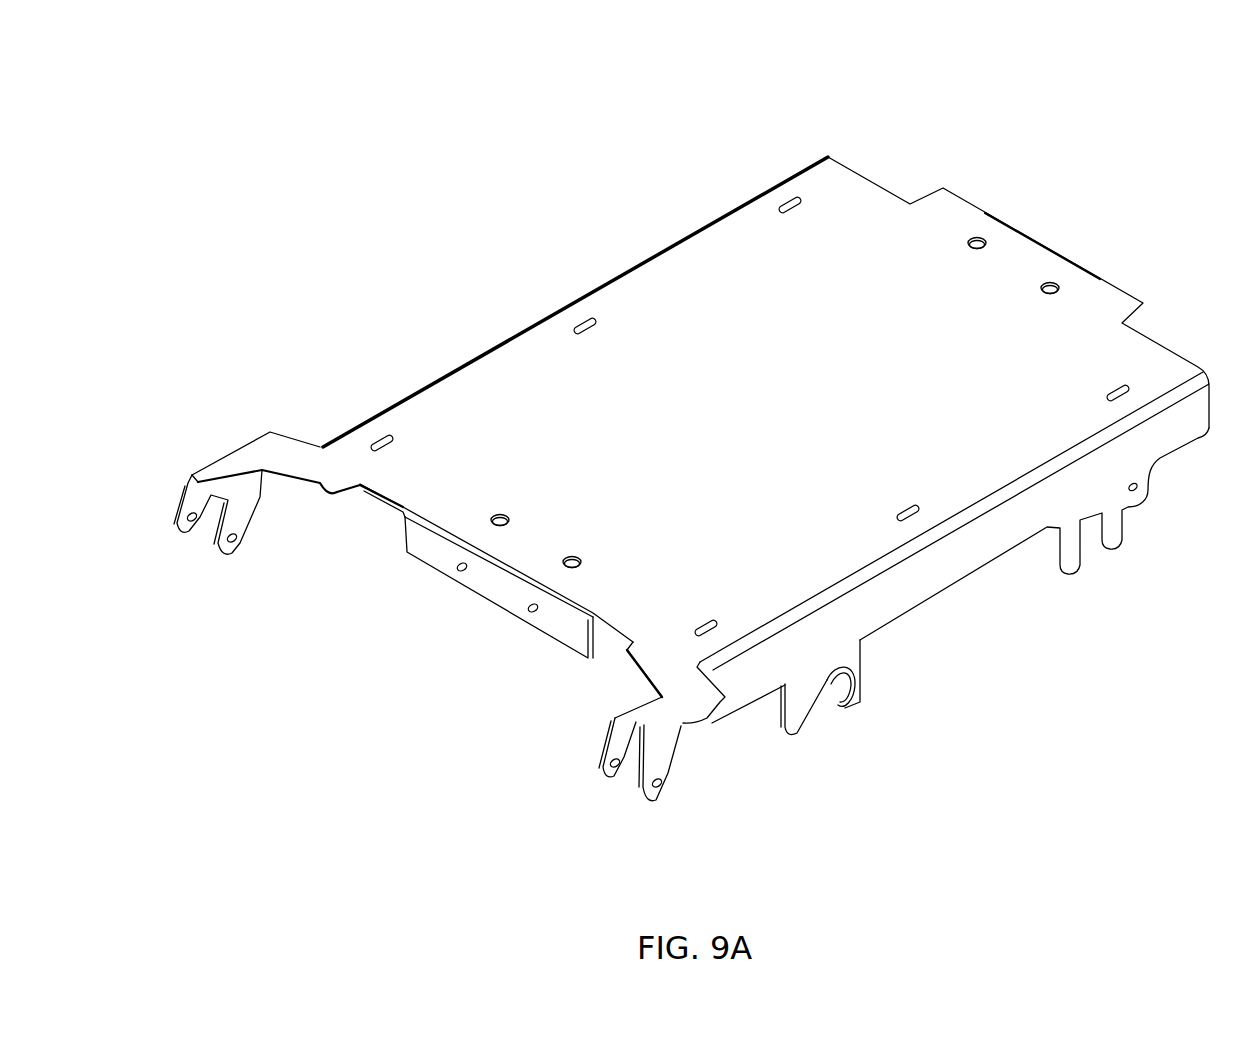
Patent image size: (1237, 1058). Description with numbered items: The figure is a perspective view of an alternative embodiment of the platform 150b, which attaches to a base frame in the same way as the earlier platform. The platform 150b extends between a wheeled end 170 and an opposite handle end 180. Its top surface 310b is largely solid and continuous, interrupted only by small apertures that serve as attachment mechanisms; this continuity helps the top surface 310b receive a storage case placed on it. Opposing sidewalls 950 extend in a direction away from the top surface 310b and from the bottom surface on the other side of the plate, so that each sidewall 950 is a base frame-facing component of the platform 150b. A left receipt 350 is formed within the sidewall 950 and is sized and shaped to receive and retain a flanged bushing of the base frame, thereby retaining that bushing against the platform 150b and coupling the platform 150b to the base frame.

The handle end 180 is at (667, 471).
The platform 150b is at (562, 308).
The top surface 310b is at (847, 308).
The wheeled end 170 is at (438, 607).
The sidewall 950 is at (977, 543).
The left receipt 350 is at (822, 703).